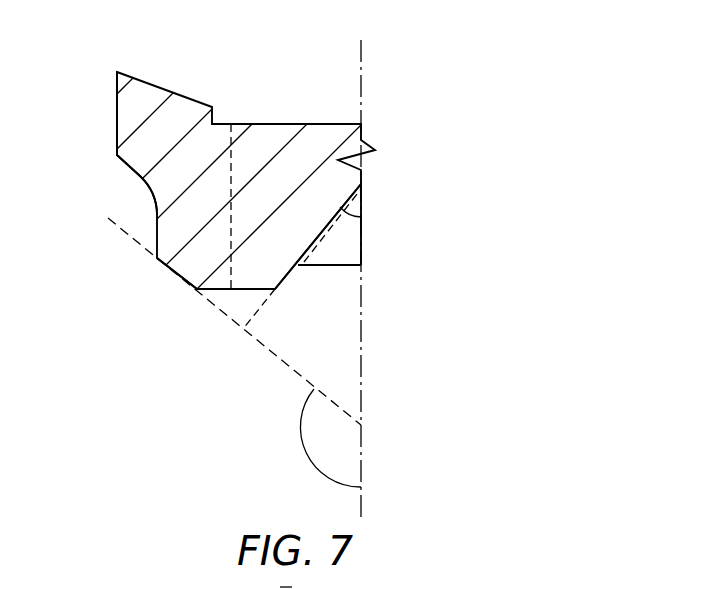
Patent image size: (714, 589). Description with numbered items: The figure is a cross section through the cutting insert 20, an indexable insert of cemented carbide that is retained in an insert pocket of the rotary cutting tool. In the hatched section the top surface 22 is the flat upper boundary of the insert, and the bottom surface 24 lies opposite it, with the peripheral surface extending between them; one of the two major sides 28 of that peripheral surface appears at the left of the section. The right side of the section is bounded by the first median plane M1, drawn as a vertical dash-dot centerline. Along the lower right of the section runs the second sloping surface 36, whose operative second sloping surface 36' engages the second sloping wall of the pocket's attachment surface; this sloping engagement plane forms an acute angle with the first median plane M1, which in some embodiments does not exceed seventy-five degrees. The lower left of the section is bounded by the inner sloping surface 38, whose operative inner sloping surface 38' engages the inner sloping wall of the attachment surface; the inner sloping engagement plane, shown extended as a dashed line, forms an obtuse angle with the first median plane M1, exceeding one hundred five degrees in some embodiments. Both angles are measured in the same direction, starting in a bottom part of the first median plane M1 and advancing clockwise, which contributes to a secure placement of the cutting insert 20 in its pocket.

The cutting insert 20 is at (212, 93).
The top surface 22 is at (307, 92).
The bottom surface 24 is at (318, 347).
The major side 28 is at (117, 113).
The second sloping surface 36 is at (372, 256).
The operative second sloping surface 36' is at (329, 224).
The inner sloping surface 38 is at (167, 283).
The operative inner sloping surface 38' is at (234, 321).
The first median plane M1 is at (361, 263).